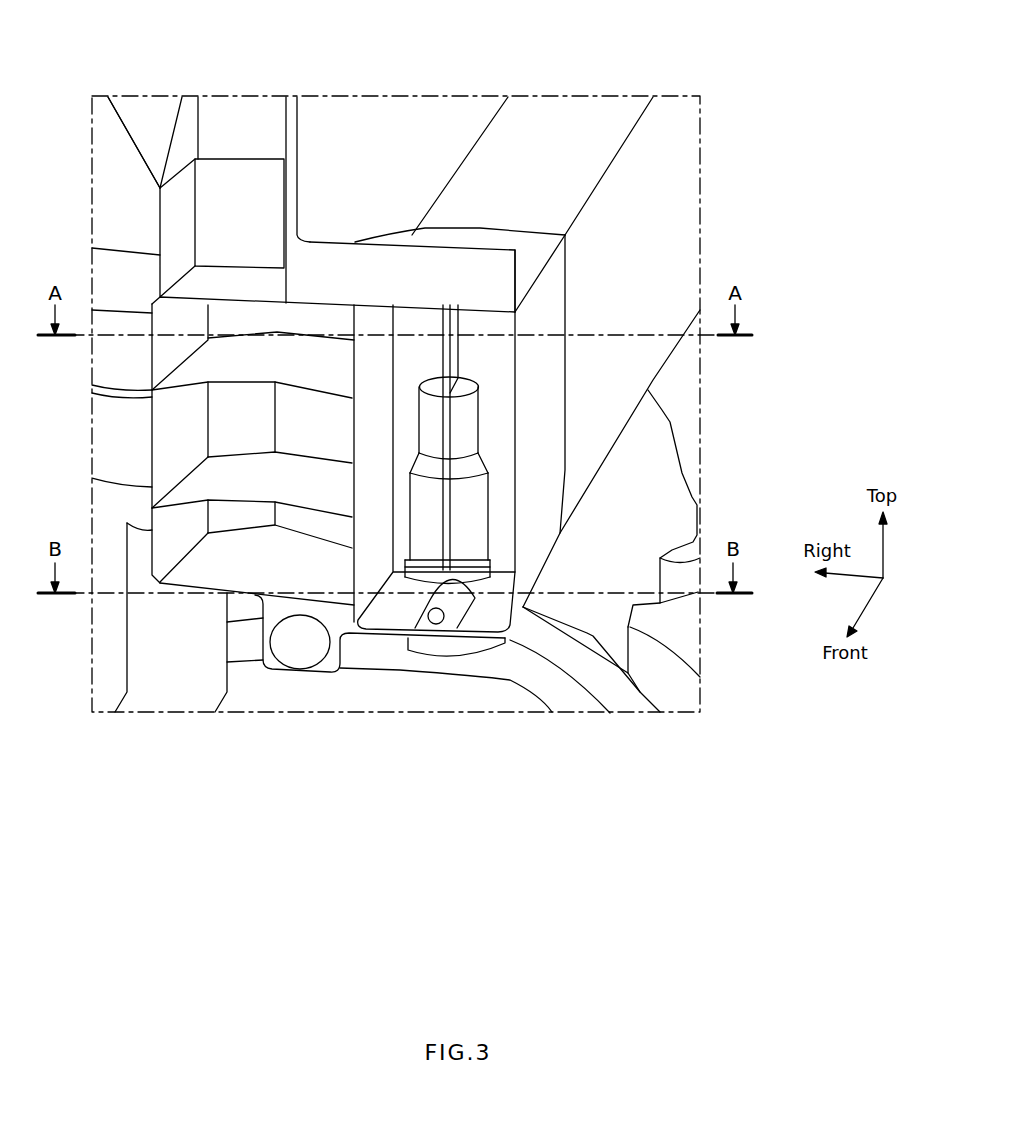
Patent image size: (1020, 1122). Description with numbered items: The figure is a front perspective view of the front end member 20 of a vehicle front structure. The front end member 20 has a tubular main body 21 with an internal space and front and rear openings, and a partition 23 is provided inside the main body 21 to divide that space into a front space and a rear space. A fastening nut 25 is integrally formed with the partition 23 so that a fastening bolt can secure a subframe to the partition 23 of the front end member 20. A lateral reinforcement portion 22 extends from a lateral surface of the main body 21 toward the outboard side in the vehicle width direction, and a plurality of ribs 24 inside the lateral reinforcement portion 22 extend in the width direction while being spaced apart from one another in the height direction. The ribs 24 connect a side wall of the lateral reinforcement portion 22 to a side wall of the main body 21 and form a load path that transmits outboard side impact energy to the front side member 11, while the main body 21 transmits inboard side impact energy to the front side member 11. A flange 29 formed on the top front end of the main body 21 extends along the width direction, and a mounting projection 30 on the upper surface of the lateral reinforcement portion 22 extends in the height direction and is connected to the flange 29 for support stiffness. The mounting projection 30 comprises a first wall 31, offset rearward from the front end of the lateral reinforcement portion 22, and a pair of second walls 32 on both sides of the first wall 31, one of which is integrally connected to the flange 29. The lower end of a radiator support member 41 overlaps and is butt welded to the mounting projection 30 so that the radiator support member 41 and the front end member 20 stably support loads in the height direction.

The front side member 11 is at (665, 183).
The front end member 20 is at (377, 690).
The main body 21 is at (545, 418).
The lateral reinforcement portion 22 is at (407, 240).
The partition 23 is at (497, 512).
The ribs 24 is at (212, 370).
The fastening nut 25 is at (470, 537).
The flange 29 is at (473, 277).
The mounting projection 30 is at (140, 222).
The first wall 31 is at (250, 197).
The second walls 32 is at (287, 191).
The radiator support member 41 is at (172, 131).